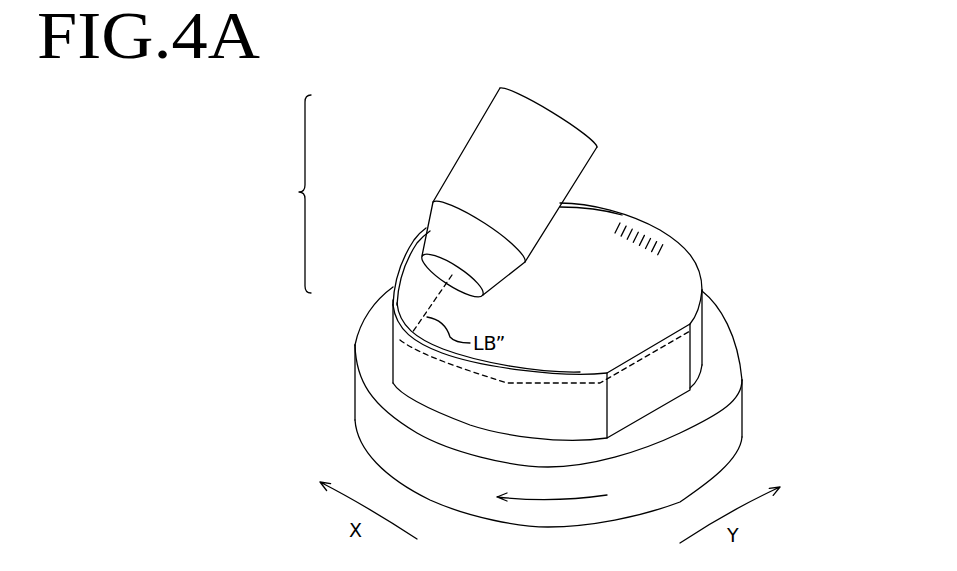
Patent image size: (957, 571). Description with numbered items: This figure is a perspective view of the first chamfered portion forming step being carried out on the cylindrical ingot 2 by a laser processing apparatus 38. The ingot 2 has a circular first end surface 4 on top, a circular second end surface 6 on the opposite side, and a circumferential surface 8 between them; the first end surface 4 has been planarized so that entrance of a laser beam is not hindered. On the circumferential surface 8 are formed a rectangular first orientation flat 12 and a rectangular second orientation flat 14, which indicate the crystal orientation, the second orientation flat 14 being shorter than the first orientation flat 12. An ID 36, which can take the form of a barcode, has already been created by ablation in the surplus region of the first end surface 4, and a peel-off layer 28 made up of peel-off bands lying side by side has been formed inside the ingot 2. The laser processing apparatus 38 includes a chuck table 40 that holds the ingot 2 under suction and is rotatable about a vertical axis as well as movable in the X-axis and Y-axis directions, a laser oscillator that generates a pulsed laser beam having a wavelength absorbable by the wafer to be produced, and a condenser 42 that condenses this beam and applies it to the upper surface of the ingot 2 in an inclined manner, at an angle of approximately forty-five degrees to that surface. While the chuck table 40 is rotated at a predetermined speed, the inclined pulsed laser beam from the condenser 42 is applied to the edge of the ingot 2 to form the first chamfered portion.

The ingot 2 is at (410, 240).
The first end surface 4 is at (416, 274).
The second end surface 6 is at (396, 382).
The circumferential surface 8 is at (490, 417).
The first orientation flat 12 is at (647, 388).
The second orientation flat 14 is at (676, 240).
The peel-off layer 28 is at (354, 347).
The ID 36 is at (655, 253).
The laser processing apparatus 38 is at (293, 194).
The chuck table 40 is at (378, 322).
The condenser 42 is at (483, 170).